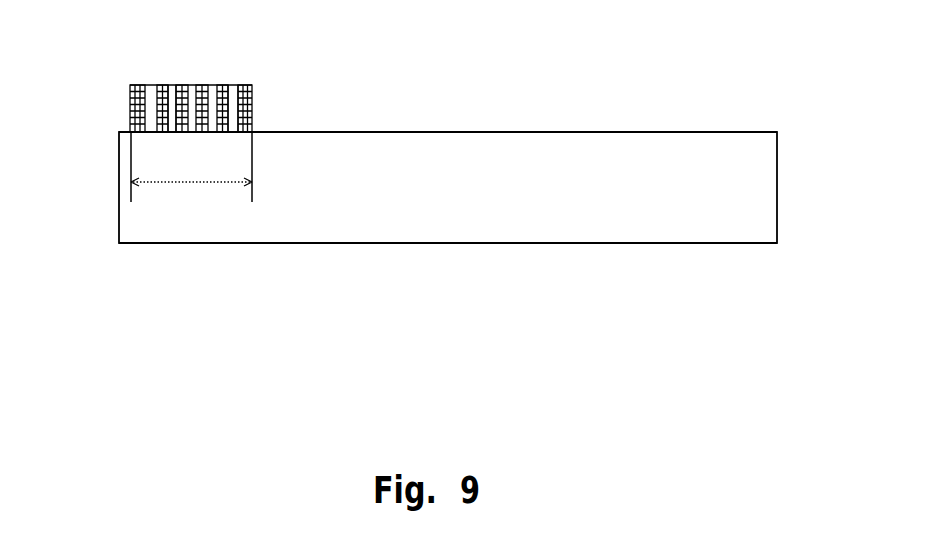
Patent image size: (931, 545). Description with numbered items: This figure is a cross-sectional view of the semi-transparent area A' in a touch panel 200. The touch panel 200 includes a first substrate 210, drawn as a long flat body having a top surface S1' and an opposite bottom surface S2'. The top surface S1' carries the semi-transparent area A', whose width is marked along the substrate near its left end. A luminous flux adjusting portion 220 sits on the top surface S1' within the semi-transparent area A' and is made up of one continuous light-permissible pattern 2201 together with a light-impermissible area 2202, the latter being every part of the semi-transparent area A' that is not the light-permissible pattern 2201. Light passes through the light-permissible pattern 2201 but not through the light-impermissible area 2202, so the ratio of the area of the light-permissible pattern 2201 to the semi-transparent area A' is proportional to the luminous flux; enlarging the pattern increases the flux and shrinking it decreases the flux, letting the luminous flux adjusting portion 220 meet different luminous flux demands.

The touch panel 200 is at (686, 101).
The first substrate 210 is at (129, 192).
The luminous flux adjusting portion 220 is at (233, 44).
The light-permissible pattern 2201 is at (226, 100).
The light-impermissible area 2202 is at (171, 117).
The top surface S1' is at (474, 106).
The bottom surface S2' is at (474, 279).
The semi-transparent area A' is at (191, 167).